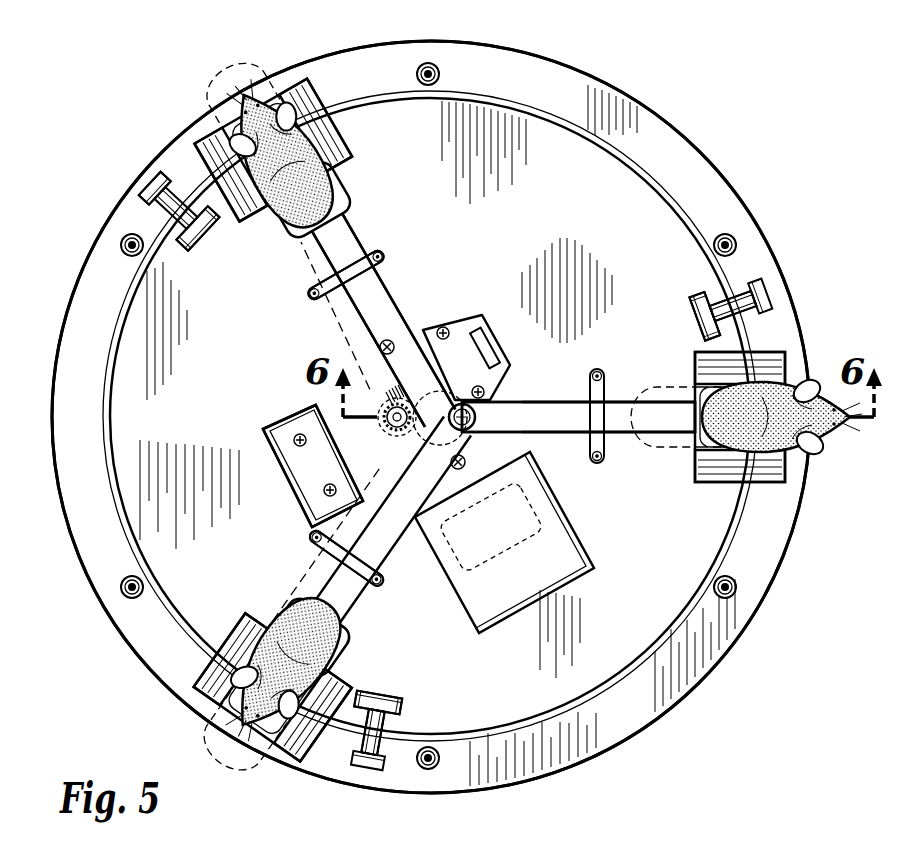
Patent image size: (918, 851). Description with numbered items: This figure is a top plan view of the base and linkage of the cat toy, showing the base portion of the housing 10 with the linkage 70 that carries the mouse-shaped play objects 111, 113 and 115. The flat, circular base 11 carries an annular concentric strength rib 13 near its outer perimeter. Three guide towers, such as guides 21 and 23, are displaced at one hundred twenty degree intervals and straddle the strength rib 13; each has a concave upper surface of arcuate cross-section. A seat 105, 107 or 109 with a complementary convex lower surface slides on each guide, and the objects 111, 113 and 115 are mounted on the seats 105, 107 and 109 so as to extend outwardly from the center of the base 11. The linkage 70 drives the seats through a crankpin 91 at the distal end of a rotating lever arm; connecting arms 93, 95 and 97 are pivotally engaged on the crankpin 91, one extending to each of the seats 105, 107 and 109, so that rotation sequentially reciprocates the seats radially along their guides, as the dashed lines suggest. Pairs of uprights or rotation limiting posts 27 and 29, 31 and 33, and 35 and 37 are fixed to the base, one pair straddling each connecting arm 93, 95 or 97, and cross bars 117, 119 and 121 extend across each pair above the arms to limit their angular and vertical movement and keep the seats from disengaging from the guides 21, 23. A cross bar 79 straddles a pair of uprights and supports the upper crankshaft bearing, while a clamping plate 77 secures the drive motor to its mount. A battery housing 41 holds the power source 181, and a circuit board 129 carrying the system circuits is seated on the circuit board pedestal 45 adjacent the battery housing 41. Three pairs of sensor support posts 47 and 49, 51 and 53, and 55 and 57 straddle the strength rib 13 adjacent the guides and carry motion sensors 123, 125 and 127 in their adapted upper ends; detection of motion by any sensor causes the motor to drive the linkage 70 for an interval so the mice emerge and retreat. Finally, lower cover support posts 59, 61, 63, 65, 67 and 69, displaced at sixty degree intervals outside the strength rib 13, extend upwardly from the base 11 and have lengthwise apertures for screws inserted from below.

The housing 10 is at (184, 108).
The base 11 is at (622, 94).
The strength rib 13 is at (650, 166).
The guide 21 is at (760, 470).
The guide 23 is at (303, 84).
The upright 27 is at (604, 446).
The upright 29 is at (589, 370).
The upright 31 is at (383, 254).
The upright 33 is at (307, 294).
The upright 35 is at (311, 535).
The upright 37 is at (384, 580).
The battery housing 41 is at (576, 536).
The circuit board pedestal 45 is at (262, 430).
The sensor support post 47 is at (772, 286).
The sensor support post 49 is at (696, 300).
The sensor support post 51 is at (138, 195).
The sensor support post 53 is at (210, 250).
The sensor support post 55 is at (347, 769).
The sensor support post 57 is at (397, 692).
The lower cover support post 59 is at (731, 234).
The lower cover support post 61 is at (440, 68).
The screw 63 is at (121, 240).
The lower cover support post 65 is at (124, 598).
The lower cover support post 67 is at (441, 765).
The lower cover support post 69 is at (734, 596).
The linkage 70 is at (428, 296).
The clamping plate 77 is at (464, 318).
The cross bar 79 is at (389, 406).
The crankpin 91 is at (474, 411).
The connecting arm 93 is at (553, 426).
The connecting arm 95 is at (394, 303).
The connecting arm 97 is at (389, 522).
The seat 105 is at (712, 392).
The seat 107 is at (344, 188).
The seat 109 is at (295, 608).
The play object 111 is at (820, 438).
The play object 113 is at (248, 92).
The play object 115 is at (246, 713).
The cross-member 117 is at (608, 432).
The cross-member 119 is at (329, 279).
The cross-member 121 is at (354, 580).
The sensor 123 is at (790, 283).
The sensor 125 is at (144, 178).
The sensor 127 is at (366, 772).
The circuit board 129 is at (289, 416).
The power source 181 is at (582, 573).